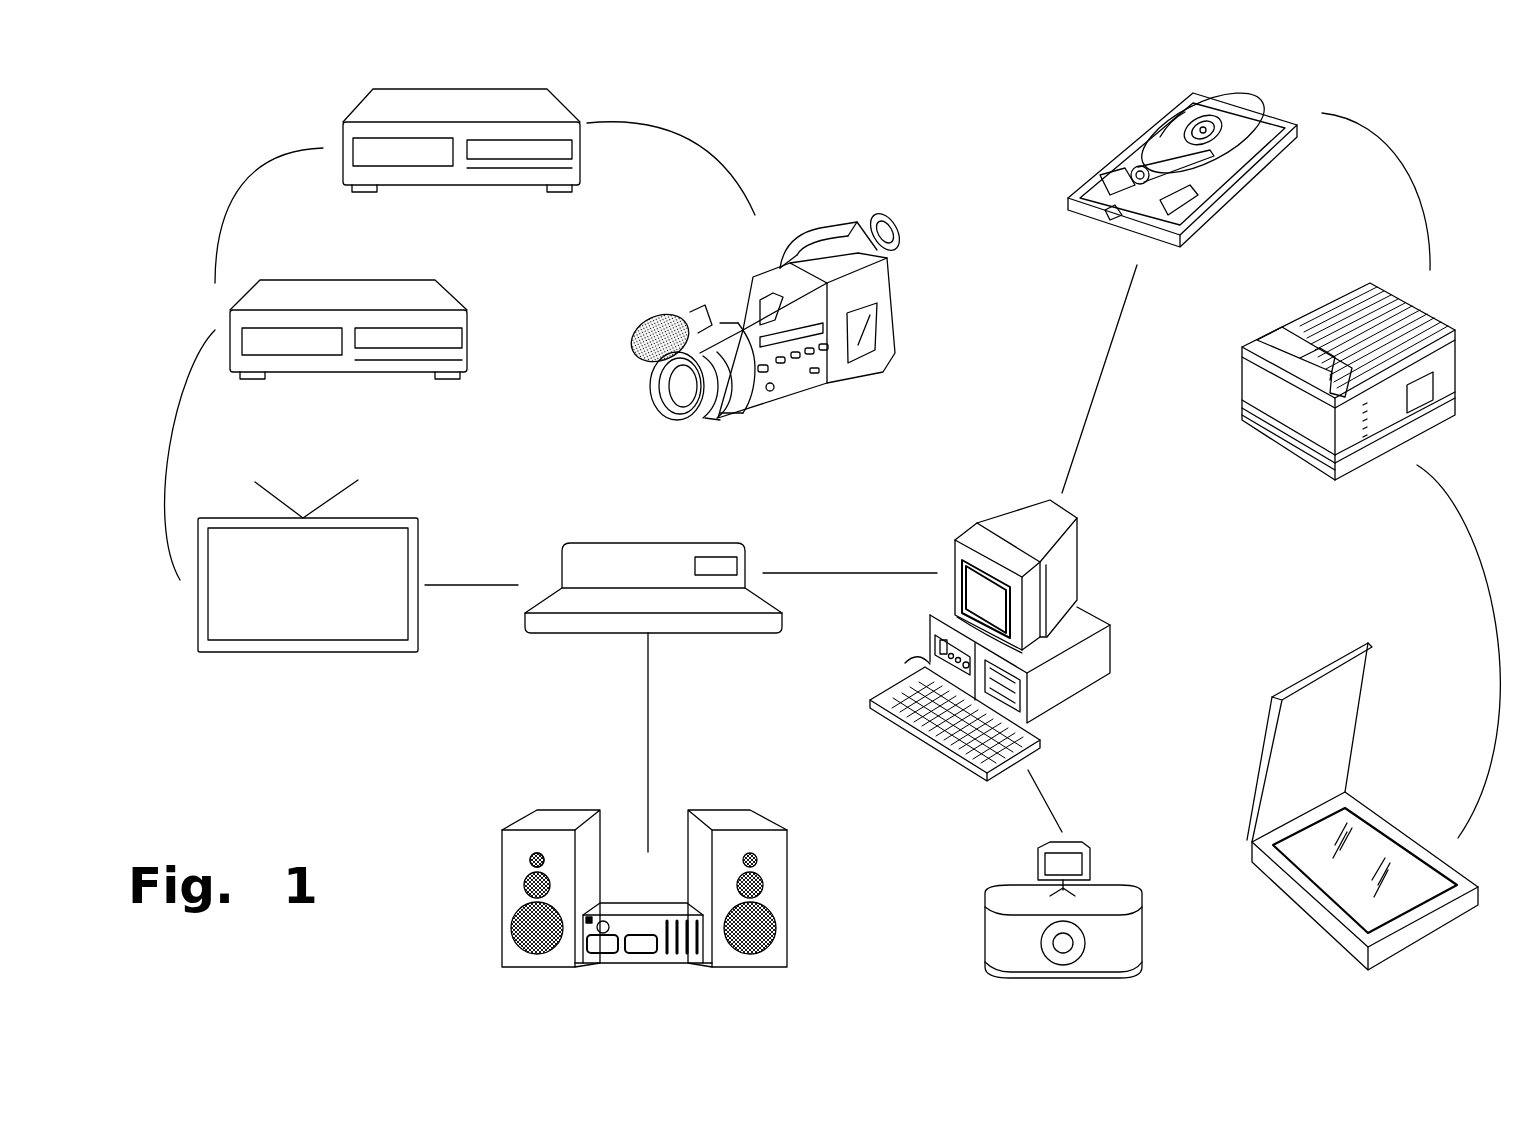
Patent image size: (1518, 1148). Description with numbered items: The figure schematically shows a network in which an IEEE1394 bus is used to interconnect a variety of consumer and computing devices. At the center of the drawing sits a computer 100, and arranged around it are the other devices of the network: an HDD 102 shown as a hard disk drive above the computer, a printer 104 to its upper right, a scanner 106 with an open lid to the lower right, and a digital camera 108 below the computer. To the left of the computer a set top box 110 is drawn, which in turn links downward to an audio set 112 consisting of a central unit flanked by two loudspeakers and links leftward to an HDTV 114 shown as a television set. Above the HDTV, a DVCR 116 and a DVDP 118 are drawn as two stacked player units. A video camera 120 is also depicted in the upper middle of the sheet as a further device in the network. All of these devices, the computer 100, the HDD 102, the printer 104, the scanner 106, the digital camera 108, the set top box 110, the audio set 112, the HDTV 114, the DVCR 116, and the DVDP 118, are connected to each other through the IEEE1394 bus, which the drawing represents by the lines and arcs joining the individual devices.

The computer 100 is at (1005, 513).
The HDD 102 is at (1118, 153).
The printer 104 is at (1433, 315).
The scanner 106 is at (1313, 673).
The digital camera 108 is at (1143, 914).
The set top box 110 is at (663, 553).
The audio set 112 is at (508, 843).
The HDTV 114 is at (387, 516).
The DVCR 116 is at (467, 340).
The DVDP 118 is at (565, 103).
The video camera 120 is at (895, 225).